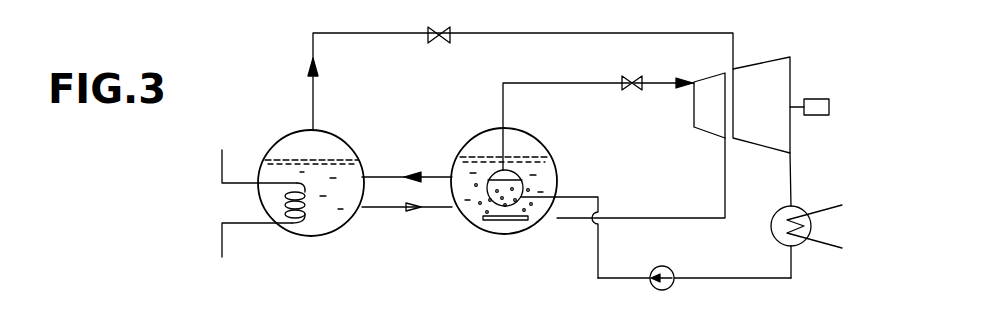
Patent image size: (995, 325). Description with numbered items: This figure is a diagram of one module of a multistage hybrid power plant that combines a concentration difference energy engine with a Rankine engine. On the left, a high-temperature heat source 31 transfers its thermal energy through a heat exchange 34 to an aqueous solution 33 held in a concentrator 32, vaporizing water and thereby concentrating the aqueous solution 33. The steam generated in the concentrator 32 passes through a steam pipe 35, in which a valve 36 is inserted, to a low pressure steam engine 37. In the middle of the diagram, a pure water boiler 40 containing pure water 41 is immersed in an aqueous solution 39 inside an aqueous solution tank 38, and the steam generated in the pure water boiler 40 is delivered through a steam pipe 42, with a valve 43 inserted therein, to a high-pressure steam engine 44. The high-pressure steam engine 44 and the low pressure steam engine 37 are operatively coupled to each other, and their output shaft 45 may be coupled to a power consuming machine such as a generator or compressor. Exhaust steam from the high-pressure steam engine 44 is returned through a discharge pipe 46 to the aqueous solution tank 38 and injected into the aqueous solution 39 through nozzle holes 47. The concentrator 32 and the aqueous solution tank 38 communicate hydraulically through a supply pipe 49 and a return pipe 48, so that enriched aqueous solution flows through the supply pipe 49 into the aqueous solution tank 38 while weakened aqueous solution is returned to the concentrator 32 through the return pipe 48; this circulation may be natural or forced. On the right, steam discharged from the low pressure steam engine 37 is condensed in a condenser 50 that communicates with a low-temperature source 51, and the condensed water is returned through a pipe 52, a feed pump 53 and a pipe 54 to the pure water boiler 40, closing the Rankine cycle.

The high-temperature heat source 31 is at (222, 166).
The concentrator 32 is at (356, 163).
The aqueous solution 33 is at (338, 213).
The heat exchange 34 is at (298, 227).
The steam pipe 35 is at (395, 33).
The valve 36 is at (451, 27).
The low pressure steam engine 37 is at (762, 58).
The aqueous solution tank 38 is at (541, 141).
The aqueous solution 39 is at (550, 176).
The pure water boiler 40 is at (491, 173).
The pure water 41 is at (493, 197).
The steam pipe 42 is at (592, 81).
The valve 43 is at (636, 76).
The high-pressure steam engine 44 is at (708, 75).
The output shaft 45 is at (817, 99).
The discharge pipe 46 is at (726, 172).
The nozzle holes 47 is at (516, 221).
The return pipe 48 is at (396, 177).
The supply pipe 49 is at (384, 210).
The condenser 50 is at (795, 207).
The low-temperature source 51 is at (826, 245).
The pipe 52 is at (740, 280).
The feed pump 53 is at (660, 291).
The pipe 54 is at (598, 266).